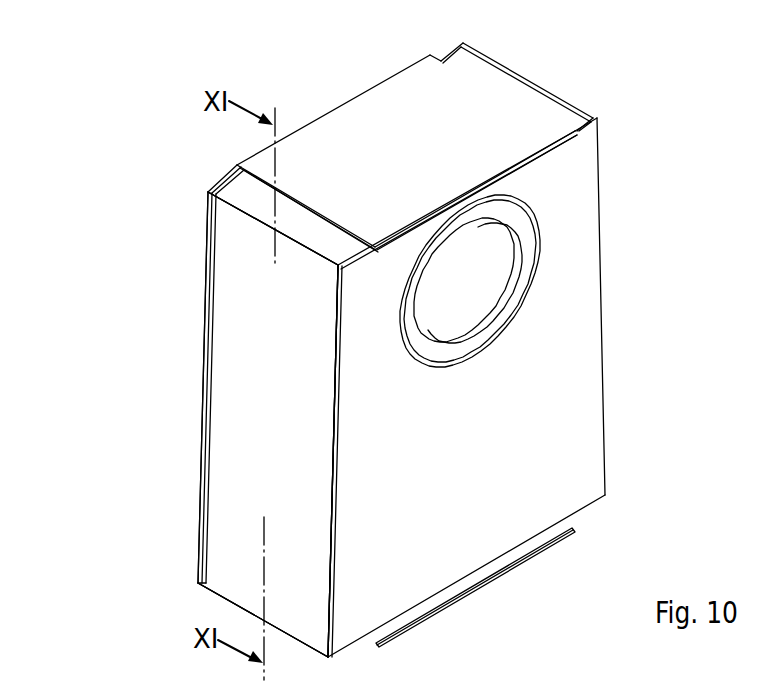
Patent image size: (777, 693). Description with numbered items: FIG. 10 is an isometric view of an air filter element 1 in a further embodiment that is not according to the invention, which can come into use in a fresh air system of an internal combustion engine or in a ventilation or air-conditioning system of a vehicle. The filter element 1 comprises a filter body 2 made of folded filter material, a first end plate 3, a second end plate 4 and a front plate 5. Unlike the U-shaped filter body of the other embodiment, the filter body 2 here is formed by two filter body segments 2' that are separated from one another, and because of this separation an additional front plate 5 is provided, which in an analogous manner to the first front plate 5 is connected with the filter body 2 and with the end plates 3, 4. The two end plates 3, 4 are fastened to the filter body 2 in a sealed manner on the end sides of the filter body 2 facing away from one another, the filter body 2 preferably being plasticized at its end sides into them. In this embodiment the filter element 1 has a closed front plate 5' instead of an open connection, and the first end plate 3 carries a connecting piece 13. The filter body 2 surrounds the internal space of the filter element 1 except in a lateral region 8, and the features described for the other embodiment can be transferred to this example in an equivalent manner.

The air filter element 1 is at (135, 140).
The filter body 2 is at (235, 424).
The filter body segment 2' is at (368, 308).
The first end plate 3 is at (580, 317).
The second end plate 4 is at (205, 297).
The front plate 5 is at (407, 138).
The closed front plate 5' is at (475, 587).
The lateral region 8 is at (480, 302).
The connecting piece 13 is at (498, 340).